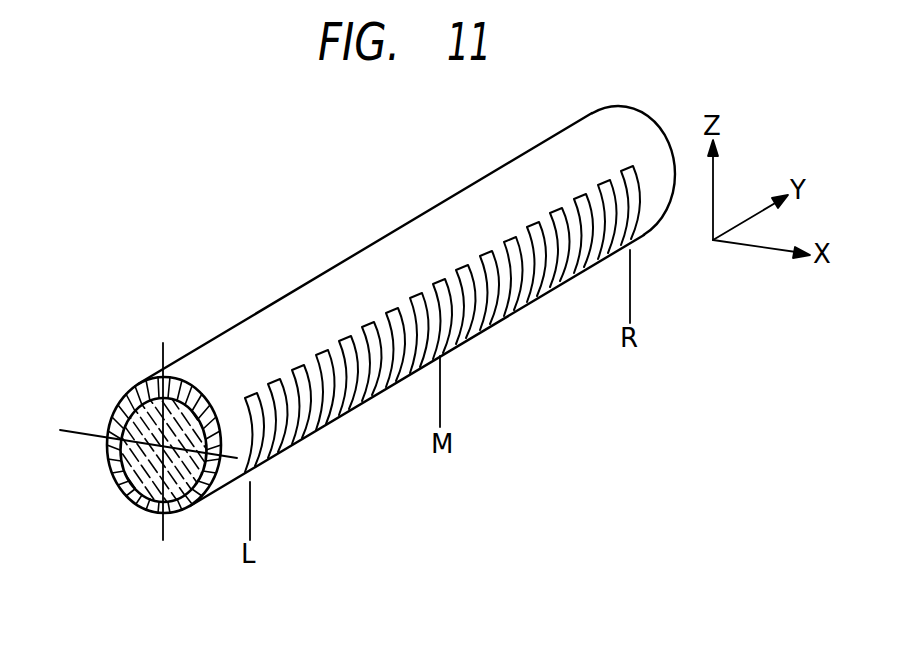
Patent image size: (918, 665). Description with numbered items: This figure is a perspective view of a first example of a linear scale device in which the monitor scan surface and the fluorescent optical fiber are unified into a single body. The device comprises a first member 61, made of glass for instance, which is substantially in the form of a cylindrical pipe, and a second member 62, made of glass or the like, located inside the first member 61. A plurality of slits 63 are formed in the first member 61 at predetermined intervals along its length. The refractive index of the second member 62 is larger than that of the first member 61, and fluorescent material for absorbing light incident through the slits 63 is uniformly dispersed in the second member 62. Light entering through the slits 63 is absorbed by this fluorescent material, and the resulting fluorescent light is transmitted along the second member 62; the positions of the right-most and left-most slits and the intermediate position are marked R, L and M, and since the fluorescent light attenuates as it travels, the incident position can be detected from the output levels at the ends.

The first member 61 is at (127, 482).
The second member 62 is at (130, 402).
The slits 63 is at (345, 345).